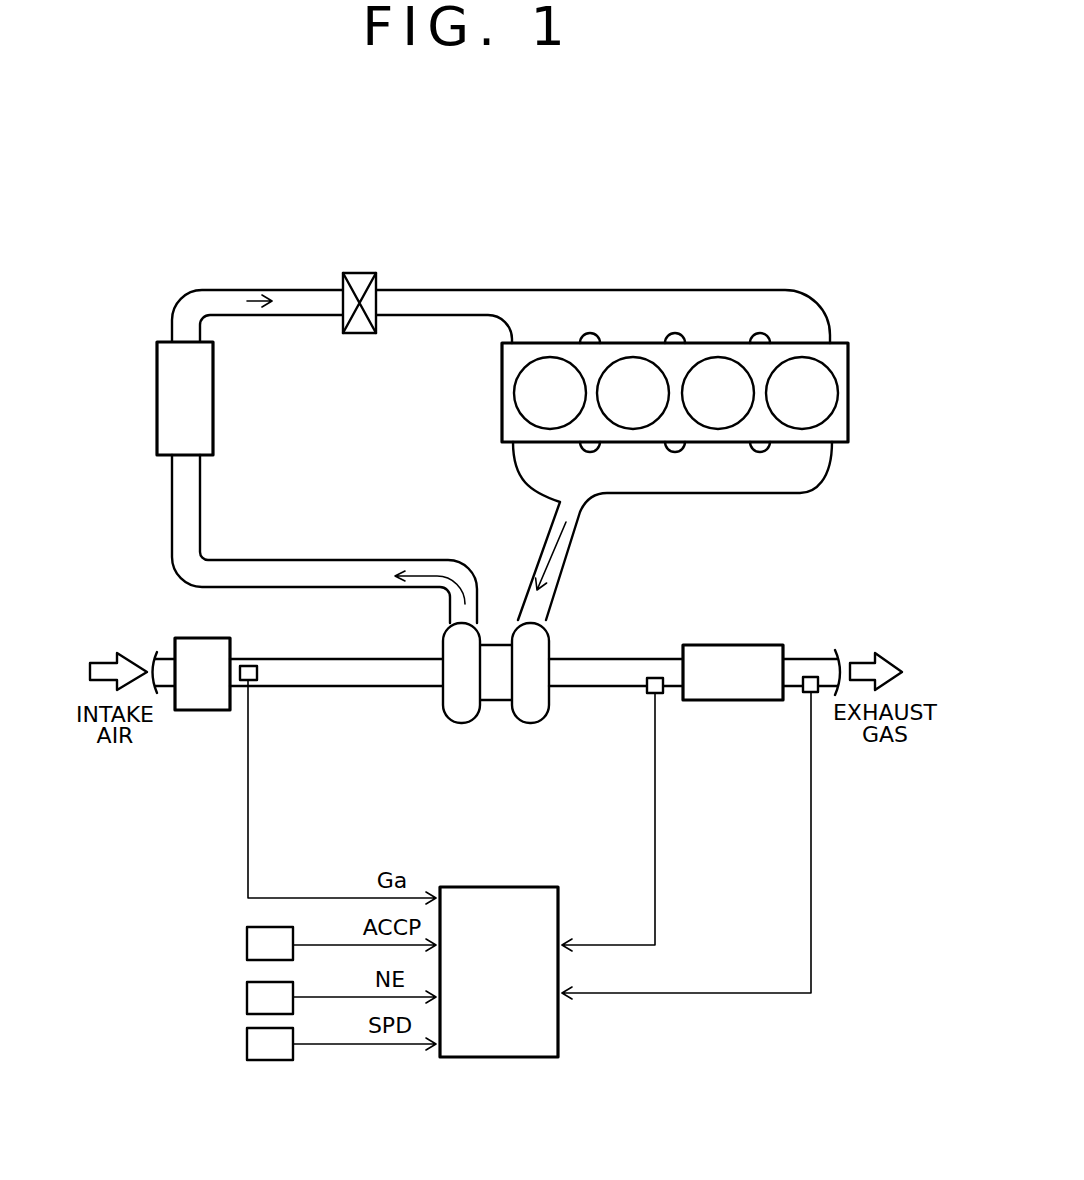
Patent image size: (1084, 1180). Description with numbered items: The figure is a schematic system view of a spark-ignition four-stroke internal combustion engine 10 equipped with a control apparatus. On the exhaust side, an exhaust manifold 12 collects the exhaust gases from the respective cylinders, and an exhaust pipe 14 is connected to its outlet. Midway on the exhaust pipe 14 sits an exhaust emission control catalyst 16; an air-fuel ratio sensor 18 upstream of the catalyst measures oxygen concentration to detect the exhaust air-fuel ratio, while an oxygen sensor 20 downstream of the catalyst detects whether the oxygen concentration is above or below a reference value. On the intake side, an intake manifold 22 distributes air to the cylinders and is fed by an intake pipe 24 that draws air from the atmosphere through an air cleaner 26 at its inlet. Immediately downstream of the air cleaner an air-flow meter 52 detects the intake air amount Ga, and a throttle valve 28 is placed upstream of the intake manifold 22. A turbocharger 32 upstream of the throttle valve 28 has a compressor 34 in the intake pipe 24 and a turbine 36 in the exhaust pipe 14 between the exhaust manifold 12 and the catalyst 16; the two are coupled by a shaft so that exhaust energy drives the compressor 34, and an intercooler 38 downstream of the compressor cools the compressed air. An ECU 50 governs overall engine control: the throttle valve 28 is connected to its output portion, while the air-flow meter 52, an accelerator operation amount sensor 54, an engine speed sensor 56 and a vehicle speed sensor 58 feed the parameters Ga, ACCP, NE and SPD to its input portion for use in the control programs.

The internal combustion engine 10 is at (791, 280).
The exhaust manifold 12 is at (730, 495).
The exhaust pipe 14 is at (565, 562).
The exhaust emission control catalyst 16 is at (770, 644).
The air-fuel ratio sensor 18 is at (660, 693).
The oxygen sensor 20 is at (803, 692).
The intake manifold 22 is at (552, 287).
The intake pipe 24 is at (327, 588).
The air cleaner 26 is at (185, 637).
The throttle valve 28 is at (370, 334).
The turbocharger 32 is at (493, 734).
The compressor 34 is at (440, 708).
The turbine 36 is at (552, 702).
The intercooler 38 is at (215, 408).
The ECU 50 is at (528, 887).
The air-flow meter 52 is at (247, 666).
The accelerator operation amount sensor 54 is at (254, 945).
The engine speed sensor 56 is at (254, 997).
The vehicle speed sensor 58 is at (254, 1044).